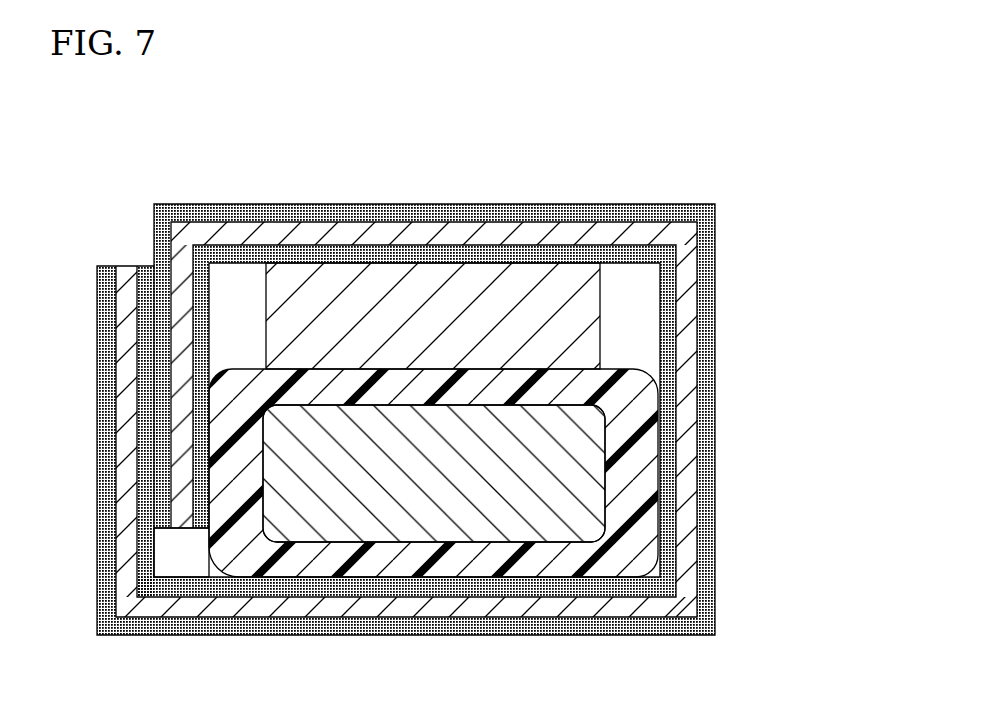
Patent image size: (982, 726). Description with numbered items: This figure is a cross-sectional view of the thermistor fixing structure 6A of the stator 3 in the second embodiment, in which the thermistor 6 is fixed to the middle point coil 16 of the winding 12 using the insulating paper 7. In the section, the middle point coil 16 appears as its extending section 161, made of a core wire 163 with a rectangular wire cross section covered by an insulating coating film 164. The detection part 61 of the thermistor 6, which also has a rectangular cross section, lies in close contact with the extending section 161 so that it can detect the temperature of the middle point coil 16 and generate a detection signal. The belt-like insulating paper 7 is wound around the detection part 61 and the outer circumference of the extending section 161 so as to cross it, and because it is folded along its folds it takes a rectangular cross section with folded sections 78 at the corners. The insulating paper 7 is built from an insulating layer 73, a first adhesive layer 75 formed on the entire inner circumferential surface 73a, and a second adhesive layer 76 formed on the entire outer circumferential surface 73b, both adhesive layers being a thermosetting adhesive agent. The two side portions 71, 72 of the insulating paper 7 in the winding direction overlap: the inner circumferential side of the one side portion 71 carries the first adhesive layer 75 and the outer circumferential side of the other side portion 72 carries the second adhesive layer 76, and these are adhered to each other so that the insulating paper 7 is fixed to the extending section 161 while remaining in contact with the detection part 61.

The stator 3 is at (633, 164).
The thermistor 6 is at (612, 289).
The thermistor fixing structure 6A is at (708, 186).
The insulating paper 7 is at (410, 344).
The winding 12 is at (650, 358).
The middle point coil 16 is at (528, 473).
The detection part 61 is at (580, 308).
The side portion 71 is at (127, 320).
The side portion 72 is at (180, 323).
The insulating layer 73 is at (360, 240).
The inner circumferential surface 73a is at (427, 250).
The outer circumferential surface 73b is at (302, 223).
The first adhesive layer 75 is at (148, 553).
The second adhesive layer 76 is at (165, 235).
The folded section 78 is at (715, 204).
The extending section 161 is at (787, 442).
The core wire 163 is at (588, 463).
The insulating coating film 164 is at (625, 502).